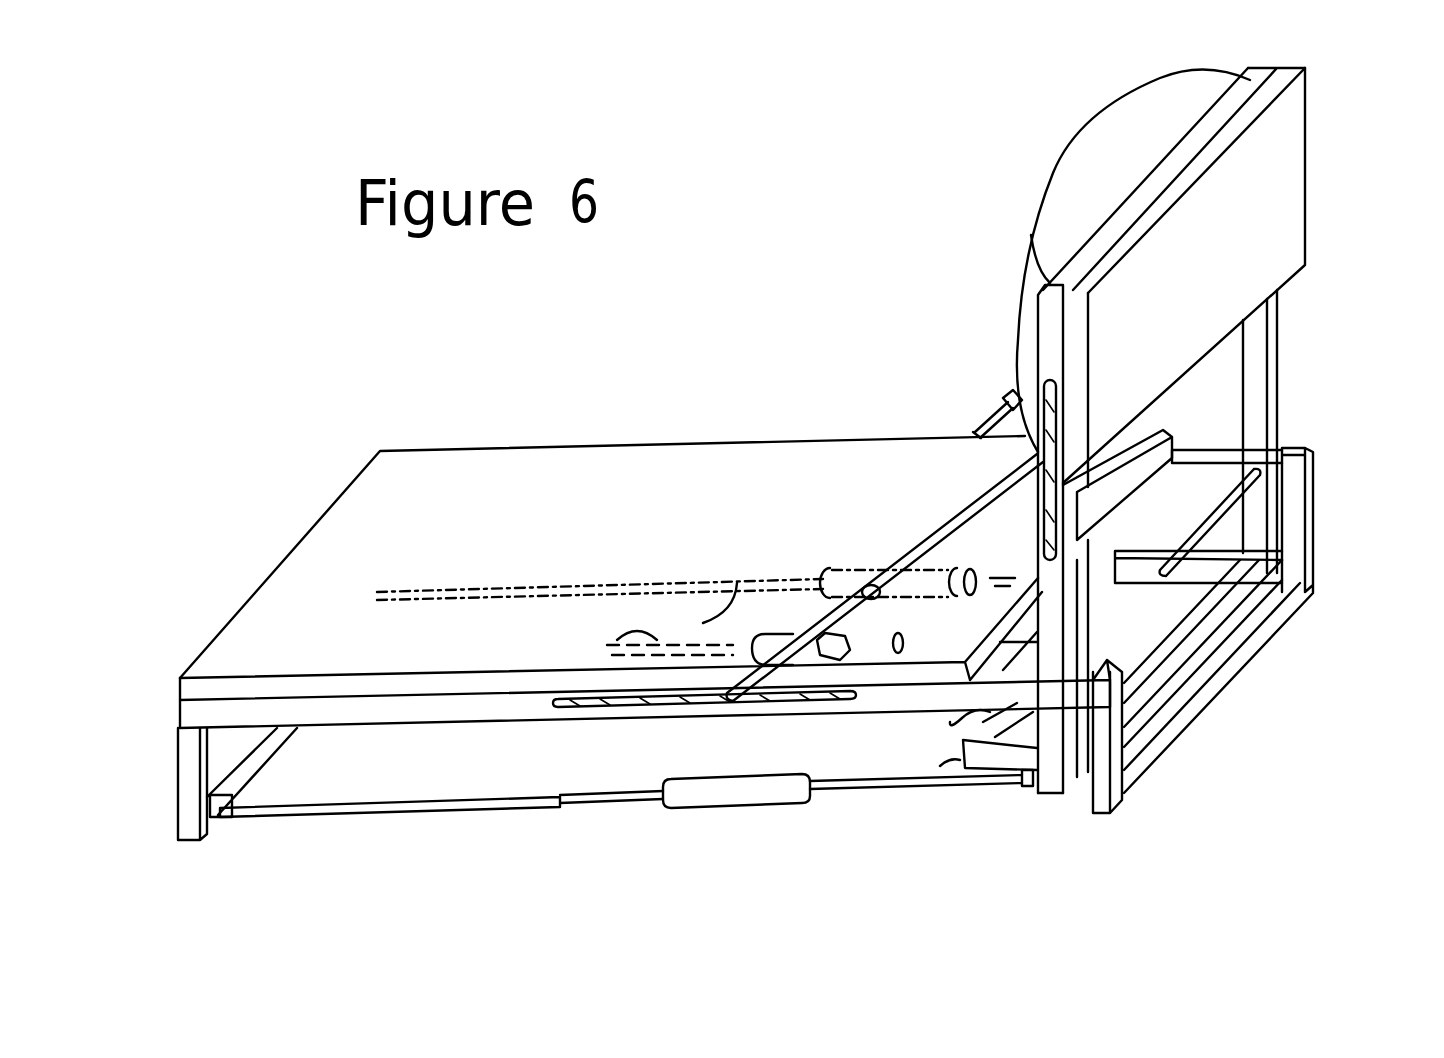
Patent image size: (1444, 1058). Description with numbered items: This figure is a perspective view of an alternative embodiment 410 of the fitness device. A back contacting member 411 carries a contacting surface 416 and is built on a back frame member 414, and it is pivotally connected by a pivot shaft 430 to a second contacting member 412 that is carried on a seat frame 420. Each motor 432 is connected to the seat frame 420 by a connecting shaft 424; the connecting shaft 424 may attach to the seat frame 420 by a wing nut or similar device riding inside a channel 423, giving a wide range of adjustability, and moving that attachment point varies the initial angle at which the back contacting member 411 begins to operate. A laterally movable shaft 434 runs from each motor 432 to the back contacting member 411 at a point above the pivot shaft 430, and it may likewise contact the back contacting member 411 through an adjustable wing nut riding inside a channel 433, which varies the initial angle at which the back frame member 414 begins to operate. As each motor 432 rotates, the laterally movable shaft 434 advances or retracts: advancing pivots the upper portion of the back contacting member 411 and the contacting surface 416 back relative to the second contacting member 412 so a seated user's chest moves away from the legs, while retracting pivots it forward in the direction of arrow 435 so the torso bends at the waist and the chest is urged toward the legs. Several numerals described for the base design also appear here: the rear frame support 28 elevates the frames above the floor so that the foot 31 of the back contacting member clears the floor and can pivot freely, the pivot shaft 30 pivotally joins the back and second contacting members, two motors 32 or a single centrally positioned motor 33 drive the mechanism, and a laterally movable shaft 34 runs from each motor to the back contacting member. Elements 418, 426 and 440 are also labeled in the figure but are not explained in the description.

The fitness device 410 is at (583, 388).
The back contacting member 411 is at (1322, 222).
The second contacting member 412 is at (857, 476).
The back frame member 414 is at (1050, 348).
The contacting surface 416 is at (1283, 207).
The backrest cushion 418 is at (1128, 150).
The seat frame 420 is at (485, 713).
The channel 423 is at (685, 702).
The connecting shaft 424 is at (557, 797).
The front leg 426 is at (185, 842).
The pivot shaft 430 is at (1212, 514).
The motor 432 is at (800, 668).
The channel 433 is at (1090, 452).
The laterally movable shaft 434 is at (873, 800).
The arrow 435 is at (847, 395).
The bracket 440 is at (975, 757).
The rear frame support 28 is at (1050, 798).
The foot 31 is at (1025, 788).
The pivot shaft 30 is at (833, 646).
The motor 32 is at (903, 648).
The motor 33 is at (790, 637).
The laterally movable shaft 34 is at (1010, 577).